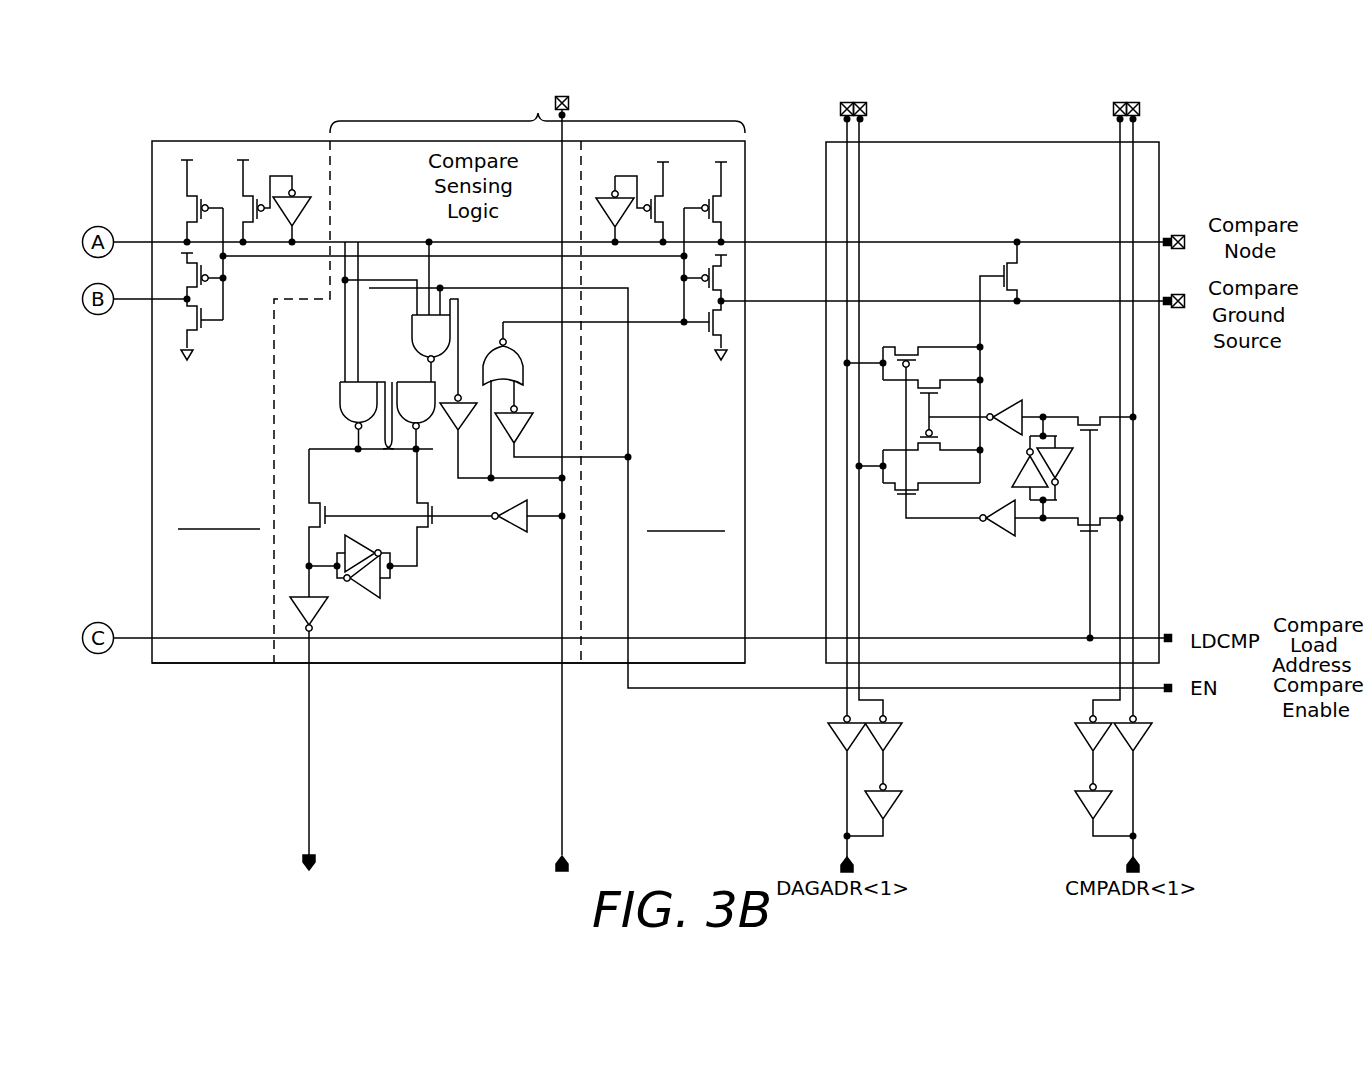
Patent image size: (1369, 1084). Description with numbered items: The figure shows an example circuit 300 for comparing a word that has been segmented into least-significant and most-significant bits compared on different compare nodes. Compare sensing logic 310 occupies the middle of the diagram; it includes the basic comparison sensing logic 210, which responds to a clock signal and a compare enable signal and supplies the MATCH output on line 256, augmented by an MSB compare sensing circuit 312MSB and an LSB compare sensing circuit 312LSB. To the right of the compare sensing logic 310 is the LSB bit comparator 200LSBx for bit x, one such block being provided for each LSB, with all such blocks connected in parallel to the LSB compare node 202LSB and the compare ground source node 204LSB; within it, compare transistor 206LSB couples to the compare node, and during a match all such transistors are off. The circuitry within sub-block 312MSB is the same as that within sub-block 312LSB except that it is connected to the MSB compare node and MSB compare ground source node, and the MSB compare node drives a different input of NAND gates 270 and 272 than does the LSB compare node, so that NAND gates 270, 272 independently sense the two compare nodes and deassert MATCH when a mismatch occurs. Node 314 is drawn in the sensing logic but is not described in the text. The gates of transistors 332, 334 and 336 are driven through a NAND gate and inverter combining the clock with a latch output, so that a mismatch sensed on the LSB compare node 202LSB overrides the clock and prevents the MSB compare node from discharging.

The circuit 300 is at (200, 118).
The transistor 332 is at (196, 198).
The transistor 334 is at (197, 278).
The transistor 336 is at (193, 332).
The node 314 is at (345, 280).
The NAND gate 270 is at (415, 318).
The NAND gate 272 is at (340, 395).
The MSB compare sensing circuit 312MSB is at (333, 384).
The LSB compare sensing circuit 312LSB is at (660, 402).
The compare sensing logic 310 is at (372, 667).
The line 256 is at (310, 745).
The comparison sensing logic 210 is at (537, 491).
The LSB bit comparator 200LSBx is at (1174, 138).
The LSB compare node 202LSB is at (1016, 242).
The transistor 206LSB is at (1012, 283).
The compare ground source node 204LSB is at (1017, 303).